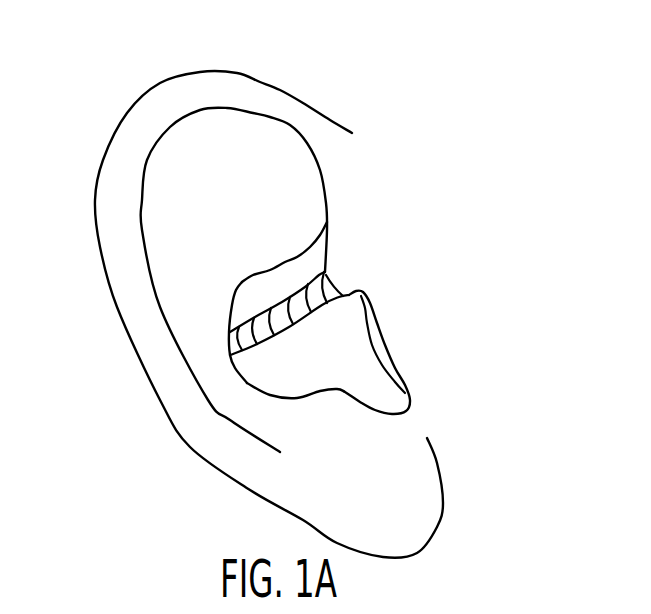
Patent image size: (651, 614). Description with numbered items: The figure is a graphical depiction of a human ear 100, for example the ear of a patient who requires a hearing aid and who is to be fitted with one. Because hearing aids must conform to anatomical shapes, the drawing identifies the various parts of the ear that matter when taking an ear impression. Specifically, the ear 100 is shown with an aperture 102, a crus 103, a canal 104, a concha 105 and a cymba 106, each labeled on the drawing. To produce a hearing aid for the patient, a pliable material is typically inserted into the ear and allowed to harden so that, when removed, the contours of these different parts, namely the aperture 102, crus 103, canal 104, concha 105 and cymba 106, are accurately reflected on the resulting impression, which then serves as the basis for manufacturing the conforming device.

The ear 100 is at (121, 75).
The aperture 102 is at (383, 328).
The crus 103 is at (333, 291).
The canal 104 is at (368, 313).
The concha 105 is at (315, 373).
The cymba 106 is at (282, 277).